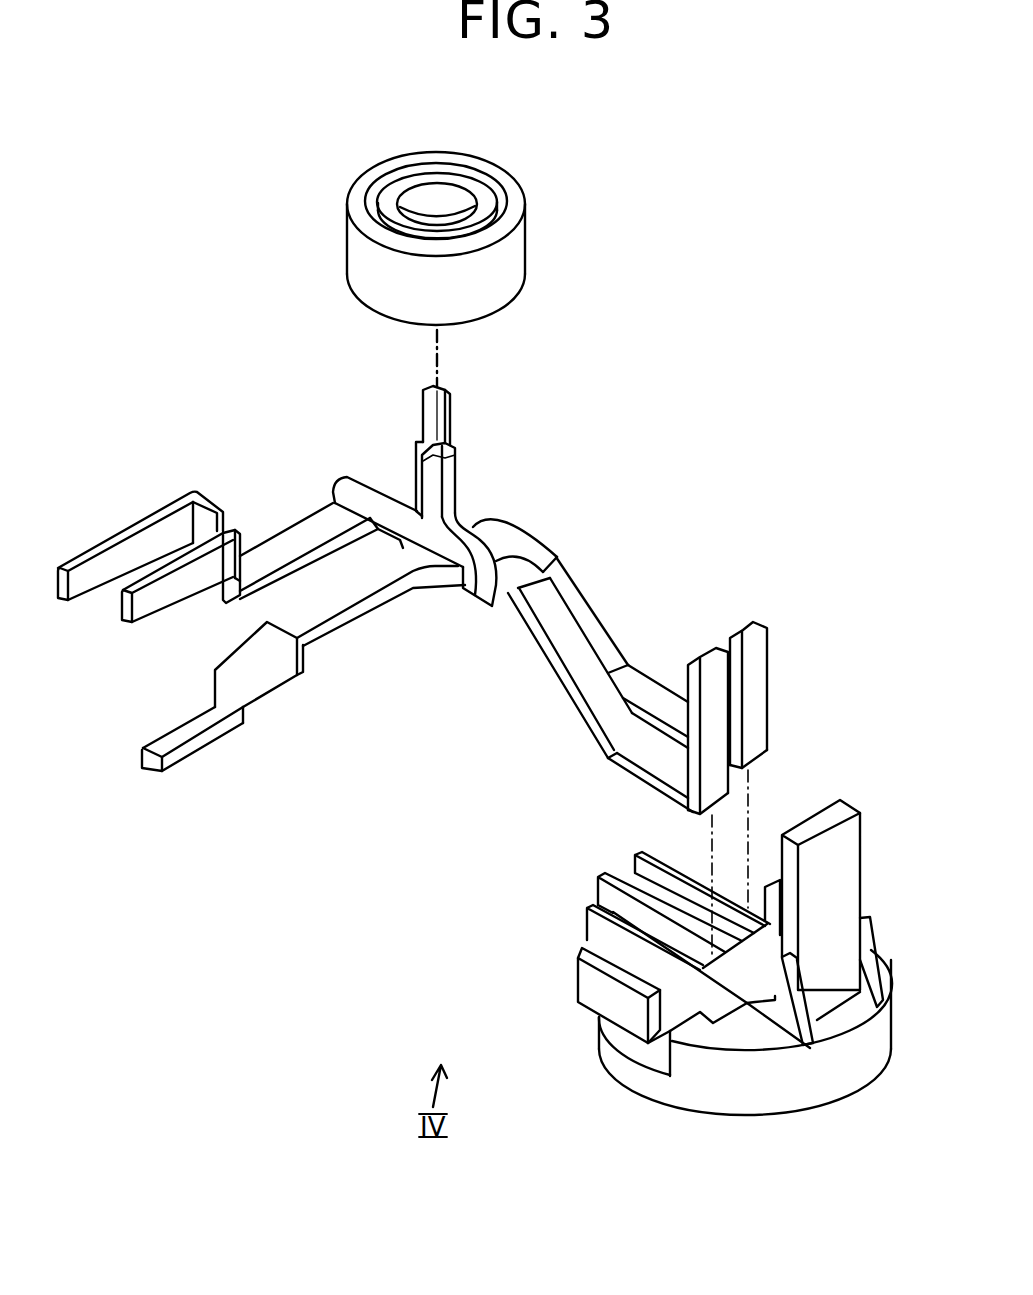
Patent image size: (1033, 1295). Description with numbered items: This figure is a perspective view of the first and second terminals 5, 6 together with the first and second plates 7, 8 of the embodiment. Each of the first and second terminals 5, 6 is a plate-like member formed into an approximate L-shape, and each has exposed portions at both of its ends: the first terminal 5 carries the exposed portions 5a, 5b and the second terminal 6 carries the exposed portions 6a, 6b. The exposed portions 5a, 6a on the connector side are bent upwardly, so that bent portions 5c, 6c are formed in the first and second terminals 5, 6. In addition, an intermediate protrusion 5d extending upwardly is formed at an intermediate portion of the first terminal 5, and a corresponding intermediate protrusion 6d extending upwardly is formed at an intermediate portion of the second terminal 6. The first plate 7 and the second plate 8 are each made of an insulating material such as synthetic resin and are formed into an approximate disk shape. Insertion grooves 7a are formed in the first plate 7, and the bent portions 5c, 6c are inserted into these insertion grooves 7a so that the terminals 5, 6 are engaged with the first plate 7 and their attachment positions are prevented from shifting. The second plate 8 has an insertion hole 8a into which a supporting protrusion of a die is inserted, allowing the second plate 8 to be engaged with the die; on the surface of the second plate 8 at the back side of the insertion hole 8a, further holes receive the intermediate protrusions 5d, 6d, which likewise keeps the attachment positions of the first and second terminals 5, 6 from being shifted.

The first terminal 5 is at (557, 637).
The exposed portion 5a is at (713, 663).
The exposed portion 5b is at (138, 609).
The bent portion 5c is at (677, 777).
The intermediate protrusion 5d is at (430, 476).
The second terminal 6 is at (510, 540).
The exposed portion 6a is at (768, 634).
The exposed portion 6b is at (162, 753).
The bent portion 6c is at (766, 743).
The intermediate protrusion 6d is at (448, 417).
The first plate 7 is at (803, 1100).
The insertion grooves 7a is at (600, 896).
The second plate 8 is at (518, 254).
The insertion hole 8a is at (437, 206).